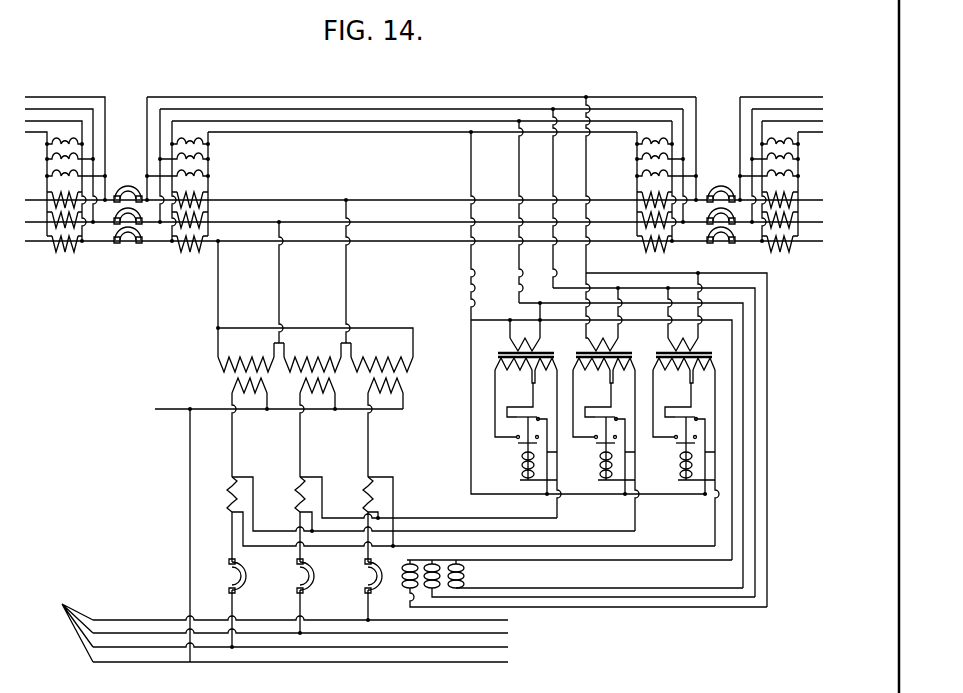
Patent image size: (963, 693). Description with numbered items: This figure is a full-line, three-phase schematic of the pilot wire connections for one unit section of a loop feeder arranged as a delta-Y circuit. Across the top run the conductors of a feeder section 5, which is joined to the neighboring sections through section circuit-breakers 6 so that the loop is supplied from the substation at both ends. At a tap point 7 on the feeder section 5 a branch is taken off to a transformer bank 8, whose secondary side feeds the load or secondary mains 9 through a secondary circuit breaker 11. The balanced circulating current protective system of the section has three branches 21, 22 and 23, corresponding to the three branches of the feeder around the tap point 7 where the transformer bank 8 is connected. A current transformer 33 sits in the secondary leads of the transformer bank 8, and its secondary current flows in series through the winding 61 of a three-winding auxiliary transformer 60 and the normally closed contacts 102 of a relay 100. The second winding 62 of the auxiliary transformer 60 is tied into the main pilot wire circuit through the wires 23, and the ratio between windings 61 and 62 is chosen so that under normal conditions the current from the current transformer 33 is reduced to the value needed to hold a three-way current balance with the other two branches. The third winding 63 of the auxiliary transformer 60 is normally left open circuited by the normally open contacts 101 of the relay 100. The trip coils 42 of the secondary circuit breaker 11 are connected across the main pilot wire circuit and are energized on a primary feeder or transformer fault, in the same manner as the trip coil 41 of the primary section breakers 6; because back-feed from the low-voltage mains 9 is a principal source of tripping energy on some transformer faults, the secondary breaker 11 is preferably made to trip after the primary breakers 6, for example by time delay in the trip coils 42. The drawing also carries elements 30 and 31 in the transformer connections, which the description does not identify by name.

The feeder section 5 is at (406, 220).
The section circuit-breaker 6 is at (129, 243).
The tap point 7 is at (219, 242).
The transformer bank 8 is at (222, 376).
The secondary mains 9 is at (275, 627).
The secondary circuit breaker 11 is at (229, 578).
The protective system branch 21 is at (316, 121).
The protective system branch 22 is at (33, 97).
The pilot wires 23 is at (519, 178).
The transformer 30 is at (485, 204).
The transformer 31 is at (62, 214).
The current transformer 33 is at (228, 488).
The trip coil 41 is at (795, 170).
The trip coils 42 is at (410, 588).
The three-winding auxiliary transformer 60 is at (536, 346).
The winding 61 is at (547, 419).
The second winding 62 is at (510, 342).
The third winding 63 is at (513, 397).
The relay 100 is at (521, 472).
The normally open contacts 101 is at (516, 441).
The normally closed contacts 102 is at (527, 421).